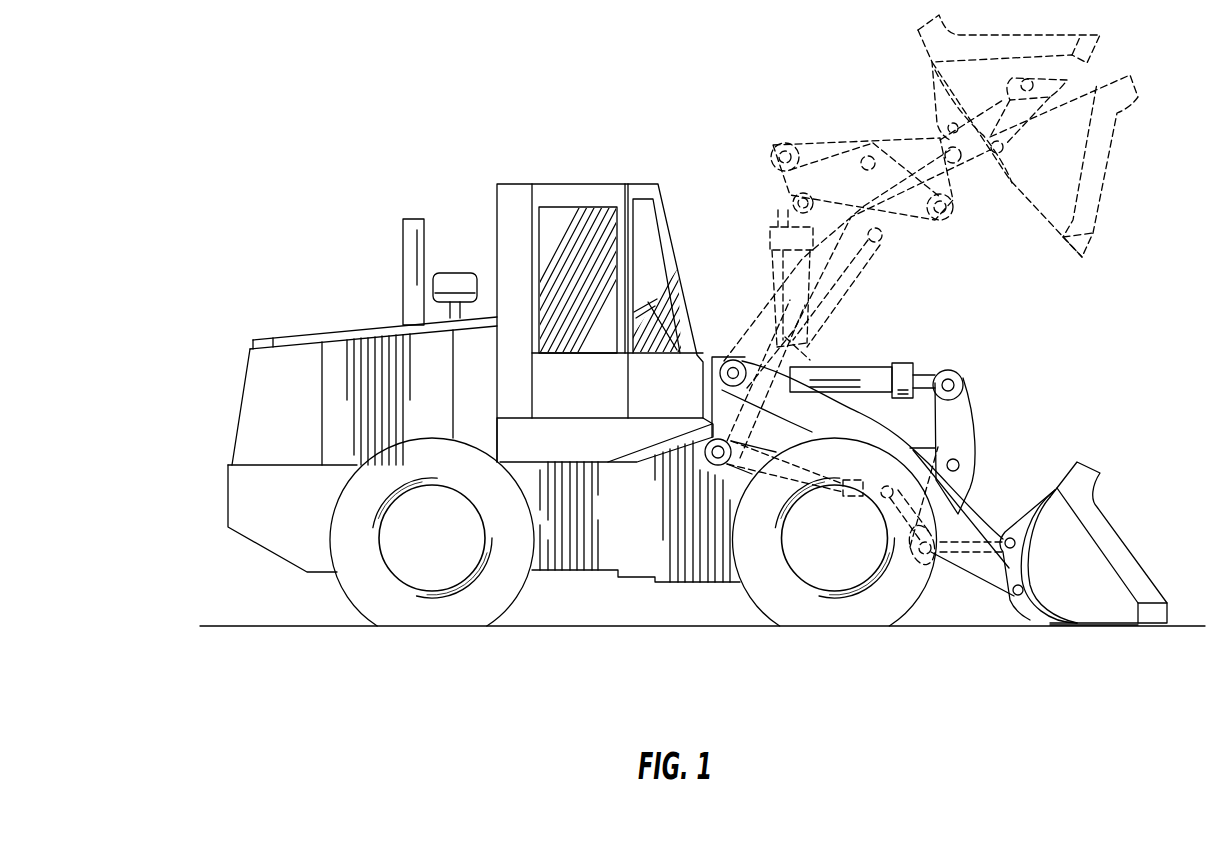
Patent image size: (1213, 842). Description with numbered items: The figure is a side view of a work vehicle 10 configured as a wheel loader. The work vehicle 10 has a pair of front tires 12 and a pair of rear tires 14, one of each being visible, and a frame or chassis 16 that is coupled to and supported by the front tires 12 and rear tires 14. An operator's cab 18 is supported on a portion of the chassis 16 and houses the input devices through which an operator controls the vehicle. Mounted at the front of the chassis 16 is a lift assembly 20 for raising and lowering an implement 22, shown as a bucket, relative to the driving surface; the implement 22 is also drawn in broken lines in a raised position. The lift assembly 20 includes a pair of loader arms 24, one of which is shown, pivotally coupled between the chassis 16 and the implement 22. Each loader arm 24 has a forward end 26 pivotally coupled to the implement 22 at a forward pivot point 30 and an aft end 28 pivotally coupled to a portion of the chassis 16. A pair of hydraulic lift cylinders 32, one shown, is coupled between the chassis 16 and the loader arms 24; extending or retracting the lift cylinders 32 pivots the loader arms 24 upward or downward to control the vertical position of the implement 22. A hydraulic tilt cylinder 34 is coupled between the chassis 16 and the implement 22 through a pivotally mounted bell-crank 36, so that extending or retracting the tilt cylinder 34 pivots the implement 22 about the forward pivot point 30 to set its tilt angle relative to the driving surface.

The work vehicle 10 is at (360, 117).
The front tires 12 is at (895, 597).
The rear tires 14 is at (362, 582).
The frame or chassis 16 is at (553, 543).
The operator's cab 18 is at (655, 240).
The lift assembly 20 is at (992, 328).
The implement 22 is at (1134, 548).
The loader arms 24 is at (948, 514).
The forward end 26 is at (993, 577).
The aft end 28 is at (745, 364).
The forward pivot point 30 is at (1020, 598).
The hydraulic lift cylinders 32 is at (738, 472).
The hydraulic tilt cylinder 34 is at (851, 358).
The bell-crank 36 is at (962, 447).